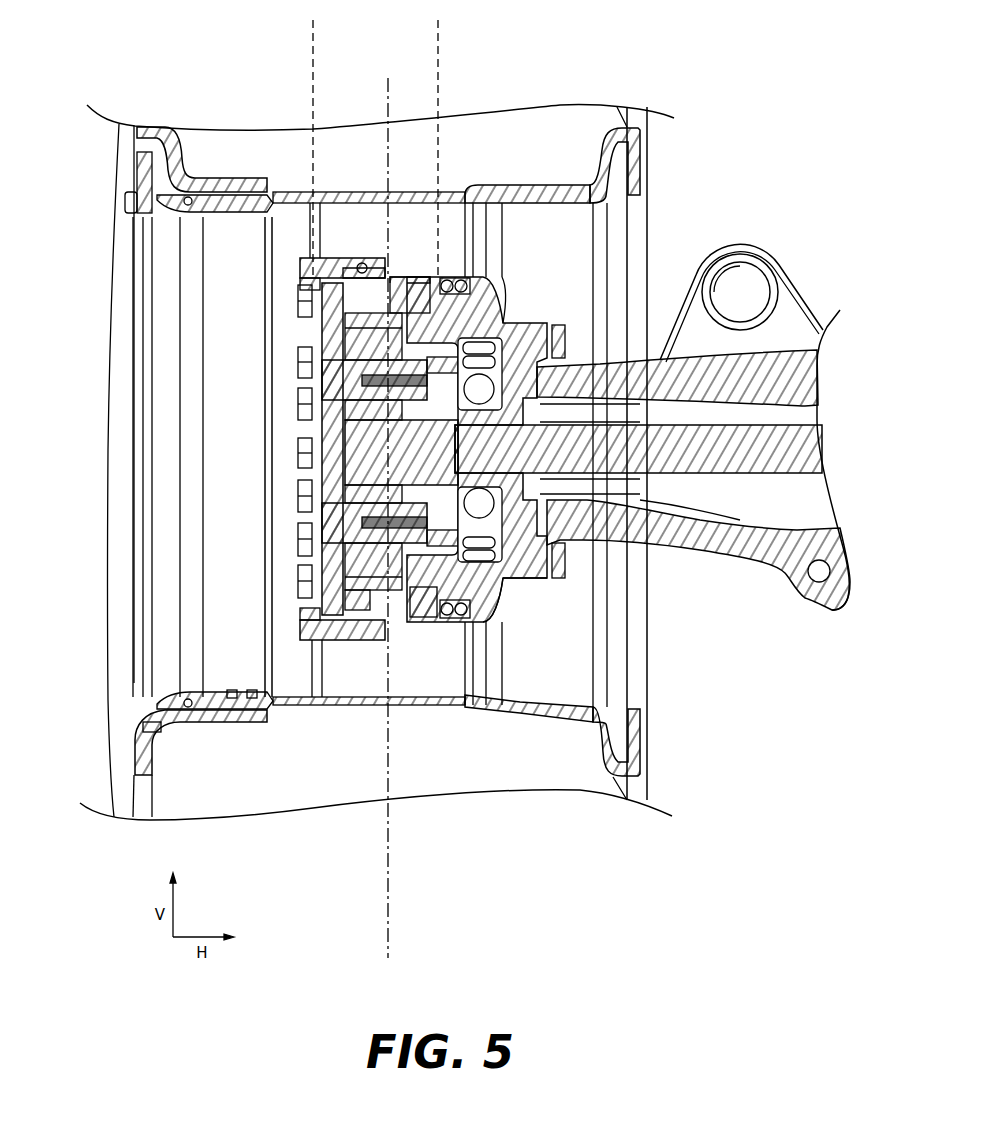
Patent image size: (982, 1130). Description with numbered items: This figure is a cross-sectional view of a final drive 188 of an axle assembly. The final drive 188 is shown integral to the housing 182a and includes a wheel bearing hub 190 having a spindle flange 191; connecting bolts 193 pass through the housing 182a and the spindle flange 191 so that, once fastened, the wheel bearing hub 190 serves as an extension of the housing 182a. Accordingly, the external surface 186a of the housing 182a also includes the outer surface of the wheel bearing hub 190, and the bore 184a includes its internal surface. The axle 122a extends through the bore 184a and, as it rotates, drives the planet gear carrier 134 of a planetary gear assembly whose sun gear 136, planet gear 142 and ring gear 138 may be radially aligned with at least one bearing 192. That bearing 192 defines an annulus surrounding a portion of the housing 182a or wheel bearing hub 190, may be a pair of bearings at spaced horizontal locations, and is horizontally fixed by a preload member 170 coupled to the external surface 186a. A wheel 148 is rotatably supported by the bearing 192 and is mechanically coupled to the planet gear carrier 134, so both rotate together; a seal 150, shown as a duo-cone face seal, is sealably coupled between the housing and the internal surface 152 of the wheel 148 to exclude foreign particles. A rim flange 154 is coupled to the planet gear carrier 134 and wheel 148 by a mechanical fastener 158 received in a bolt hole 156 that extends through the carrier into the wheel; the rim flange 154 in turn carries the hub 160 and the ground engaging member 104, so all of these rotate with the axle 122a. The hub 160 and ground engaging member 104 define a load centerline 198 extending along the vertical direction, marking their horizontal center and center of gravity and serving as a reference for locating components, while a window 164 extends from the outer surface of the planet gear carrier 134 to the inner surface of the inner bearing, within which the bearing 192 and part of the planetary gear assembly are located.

The ground engaging member 104 is at (408, 790).
The axle 122a is at (675, 463).
The planet gear carrier 134 is at (330, 352).
The sun gear 136 is at (367, 457).
The ring gear 138 is at (308, 308).
The planet gear 142 is at (308, 340).
The wheel 148 is at (420, 257).
The seal 150 is at (490, 597).
The internal surface 152 is at (358, 263).
The rim flange 154 is at (317, 677).
The bolt hole 156 is at (343, 270).
The mechanical fastener 158 is at (308, 266).
The hub 160 is at (223, 563).
The window 164 is at (313, 32).
The preload member 170 is at (357, 593).
The housing 182a is at (733, 547).
The bore 184a is at (799, 510).
The external surface 186a is at (803, 597).
The final drive 188 is at (598, 300).
The wheel bearing hub 190 is at (534, 298).
The spindle flange 191 is at (497, 575).
The bearing 192 is at (461, 272).
The connecting bolts 193 is at (557, 560).
The load centerline 198 is at (383, 158).